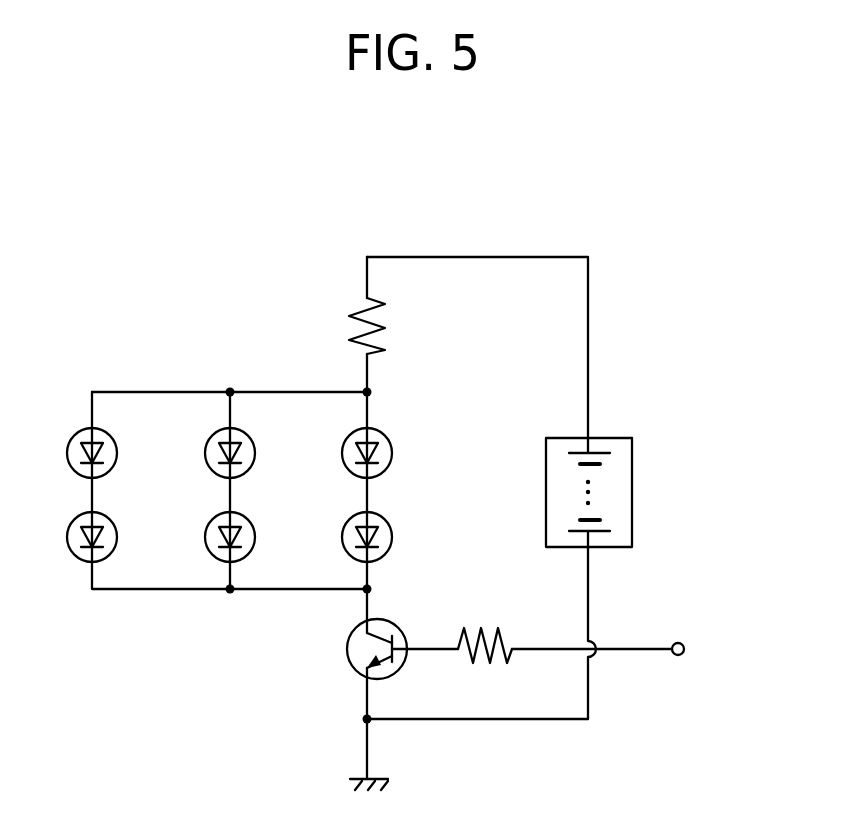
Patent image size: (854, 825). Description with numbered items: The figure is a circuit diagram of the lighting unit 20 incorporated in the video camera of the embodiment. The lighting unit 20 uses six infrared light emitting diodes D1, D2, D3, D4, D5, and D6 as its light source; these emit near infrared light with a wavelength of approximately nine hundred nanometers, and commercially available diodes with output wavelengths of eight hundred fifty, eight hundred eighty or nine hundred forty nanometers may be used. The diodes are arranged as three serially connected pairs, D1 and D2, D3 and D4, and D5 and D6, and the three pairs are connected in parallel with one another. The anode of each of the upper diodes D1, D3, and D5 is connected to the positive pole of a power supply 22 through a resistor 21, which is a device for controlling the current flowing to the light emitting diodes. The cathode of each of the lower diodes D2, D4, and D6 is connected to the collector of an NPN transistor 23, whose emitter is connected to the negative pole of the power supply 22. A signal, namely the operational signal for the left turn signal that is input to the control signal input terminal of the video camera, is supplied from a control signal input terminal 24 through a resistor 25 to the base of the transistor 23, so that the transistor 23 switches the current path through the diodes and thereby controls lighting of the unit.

The lighting unit 20 is at (515, 232).
The resistor 21 is at (350, 328).
The power supply 22 is at (634, 470).
The NPN transistor 23 is at (347, 662).
The control signal input terminal 24 is at (685, 649).
The resistor 25 is at (500, 630).
The infrared light emitting diode D1 is at (393, 452).
The infrared light emitting diode D2 is at (393, 536).
The infrared light emitting diode D3 is at (256, 452).
The infrared light emitting diode D4 is at (256, 536).
The infrared light emitting diode D5 is at (118, 452).
The infrared light emitting diode D6 is at (118, 536).